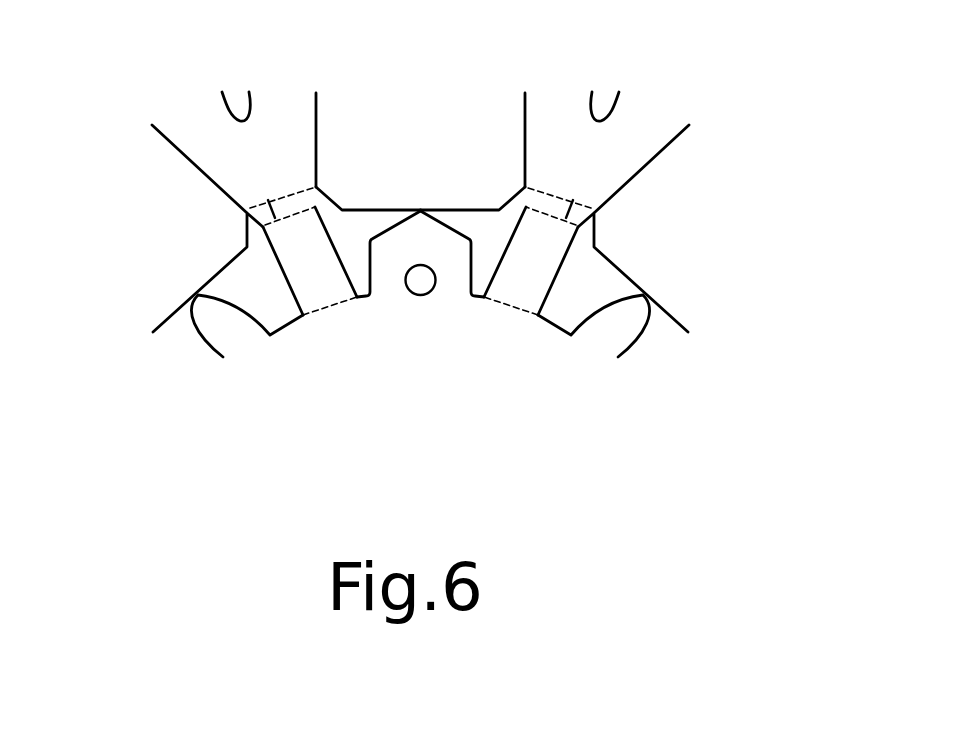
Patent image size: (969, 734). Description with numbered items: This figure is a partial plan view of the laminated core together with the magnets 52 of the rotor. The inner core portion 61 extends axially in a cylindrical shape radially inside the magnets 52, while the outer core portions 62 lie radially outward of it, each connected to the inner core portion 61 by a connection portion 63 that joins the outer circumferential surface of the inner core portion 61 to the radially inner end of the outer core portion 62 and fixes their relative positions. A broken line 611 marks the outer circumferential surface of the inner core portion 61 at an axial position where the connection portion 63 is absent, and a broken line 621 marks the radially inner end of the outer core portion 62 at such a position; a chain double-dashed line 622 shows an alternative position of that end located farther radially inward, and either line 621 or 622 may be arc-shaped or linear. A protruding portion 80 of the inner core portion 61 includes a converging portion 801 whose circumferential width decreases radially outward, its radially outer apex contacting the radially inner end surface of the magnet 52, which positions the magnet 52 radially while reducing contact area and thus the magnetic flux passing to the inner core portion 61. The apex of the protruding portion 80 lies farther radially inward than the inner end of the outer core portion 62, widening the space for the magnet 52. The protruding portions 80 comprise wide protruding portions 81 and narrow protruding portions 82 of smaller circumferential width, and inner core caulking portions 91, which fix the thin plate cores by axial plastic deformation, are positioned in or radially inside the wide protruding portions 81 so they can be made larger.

The magnet 52 is at (140, 177).
The outer core portion 62 is at (203, 130).
The broken line 621 is at (288, 193).
The chain double-dashed line 622 is at (259, 196).
The connection portion 63 is at (310, 260).
The inner core portion 61 is at (455, 320).
The broken line 611 is at (332, 308).
The converging portion 801 is at (428, 230).
The inner core caulking portion 91 is at (420, 280).
The wide protruding portion 81 is at (493, 241).
The narrow protruding portion 82 is at (657, 321).
The protruding portion 80 is at (745, 242).